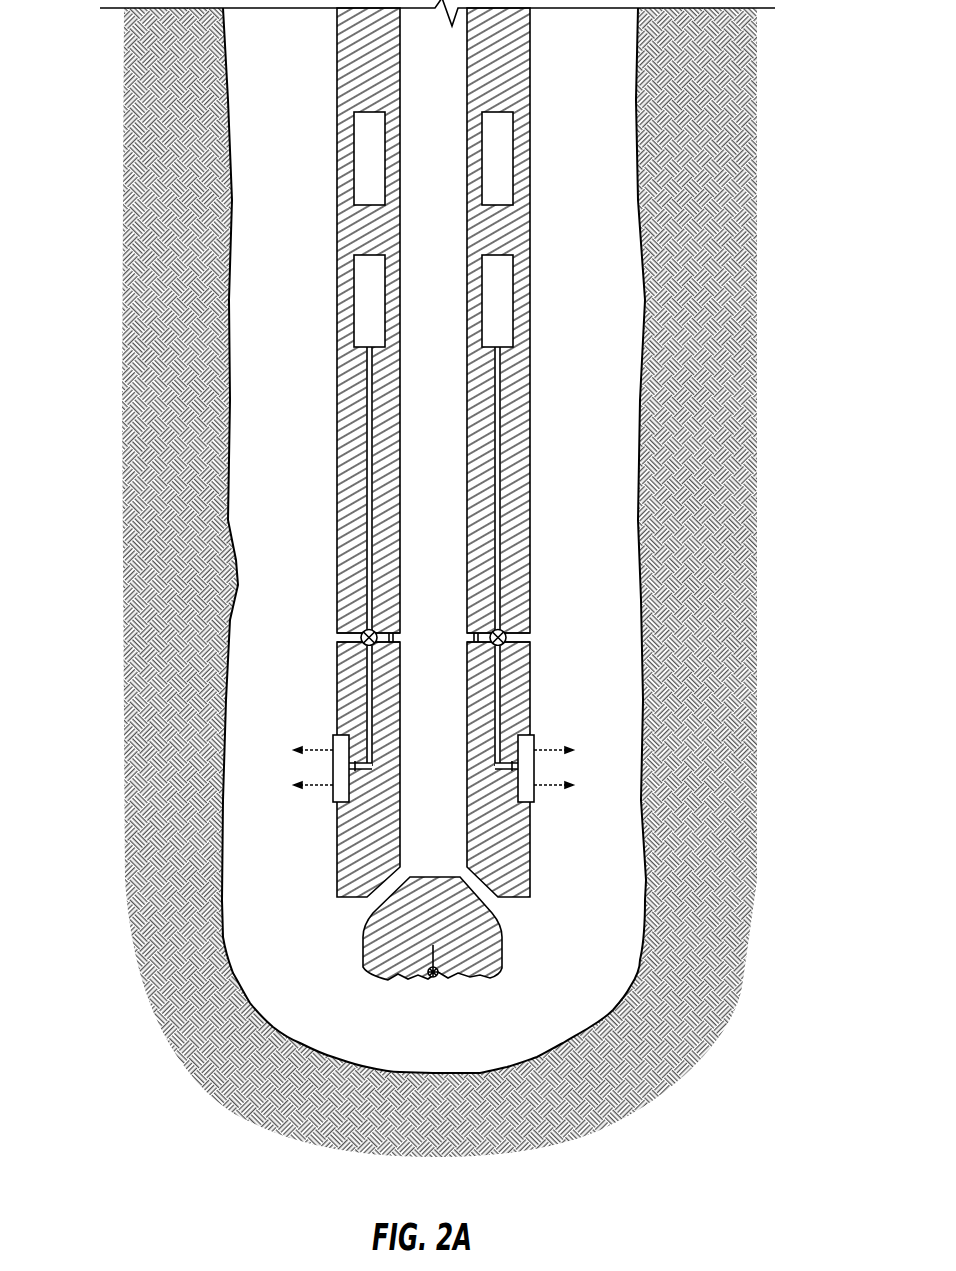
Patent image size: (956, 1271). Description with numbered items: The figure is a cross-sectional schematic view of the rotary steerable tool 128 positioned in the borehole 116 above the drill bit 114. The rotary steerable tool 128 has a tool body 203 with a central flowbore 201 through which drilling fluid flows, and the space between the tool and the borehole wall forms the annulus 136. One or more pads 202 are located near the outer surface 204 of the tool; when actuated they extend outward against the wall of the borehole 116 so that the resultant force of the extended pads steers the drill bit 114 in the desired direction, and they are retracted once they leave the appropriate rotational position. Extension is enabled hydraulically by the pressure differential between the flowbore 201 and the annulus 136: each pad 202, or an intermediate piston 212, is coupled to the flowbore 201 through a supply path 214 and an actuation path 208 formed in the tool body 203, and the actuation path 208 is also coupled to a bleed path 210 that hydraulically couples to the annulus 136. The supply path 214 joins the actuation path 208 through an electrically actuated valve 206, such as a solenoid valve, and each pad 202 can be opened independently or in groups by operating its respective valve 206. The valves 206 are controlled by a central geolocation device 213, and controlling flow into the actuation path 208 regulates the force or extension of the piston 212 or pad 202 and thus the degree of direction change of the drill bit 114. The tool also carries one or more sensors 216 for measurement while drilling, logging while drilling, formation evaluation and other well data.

The drill bit 114 is at (480, 963).
The borehole 116 is at (643, 413).
The rotary steerable tool 128 is at (433, 520).
The annulus 136 is at (593, 502).
The flowbore 201 is at (449, 455).
The pads 202 is at (336, 795).
The tool body 203 is at (345, 408).
The outer surface 204 is at (335, 675).
The electrically actuated valve 206 is at (360, 632).
The actuation path 208 is at (368, 708).
The bleed path 210 is at (337, 638).
The piston 212 is at (357, 768).
The geolocation device 213 is at (357, 275).
The supply path 214 is at (474, 631).
The sensors 216 is at (357, 135).